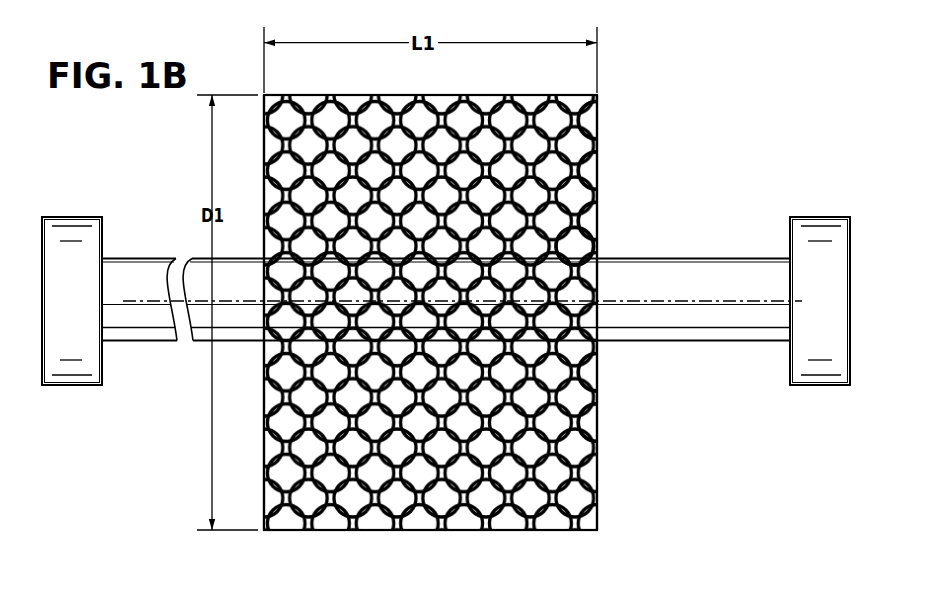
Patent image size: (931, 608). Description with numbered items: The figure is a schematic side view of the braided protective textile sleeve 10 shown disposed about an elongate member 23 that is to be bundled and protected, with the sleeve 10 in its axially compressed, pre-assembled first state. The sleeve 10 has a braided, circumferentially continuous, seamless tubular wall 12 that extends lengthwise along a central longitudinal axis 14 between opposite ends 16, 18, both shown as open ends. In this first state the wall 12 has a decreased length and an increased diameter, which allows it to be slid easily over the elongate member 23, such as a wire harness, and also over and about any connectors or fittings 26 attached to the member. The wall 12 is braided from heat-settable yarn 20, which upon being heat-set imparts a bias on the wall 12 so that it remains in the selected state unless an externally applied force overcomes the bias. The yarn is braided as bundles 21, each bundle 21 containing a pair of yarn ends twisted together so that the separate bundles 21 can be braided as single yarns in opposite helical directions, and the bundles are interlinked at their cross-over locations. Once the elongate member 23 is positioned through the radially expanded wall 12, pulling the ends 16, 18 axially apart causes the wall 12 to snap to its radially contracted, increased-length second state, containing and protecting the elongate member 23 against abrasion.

The sleeve 10 is at (650, 66).
The wall 12 is at (507, 530).
The central longitudinal axis 14 is at (644, 300).
The end 16 is at (263, 438).
The end 18 is at (597, 438).
The heat-settable braided yarn 20 is at (592, 161).
The bundles of yarn 21 is at (598, 228).
The elongate member 23 is at (734, 257).
The connectors or fittings 26 is at (70, 217).